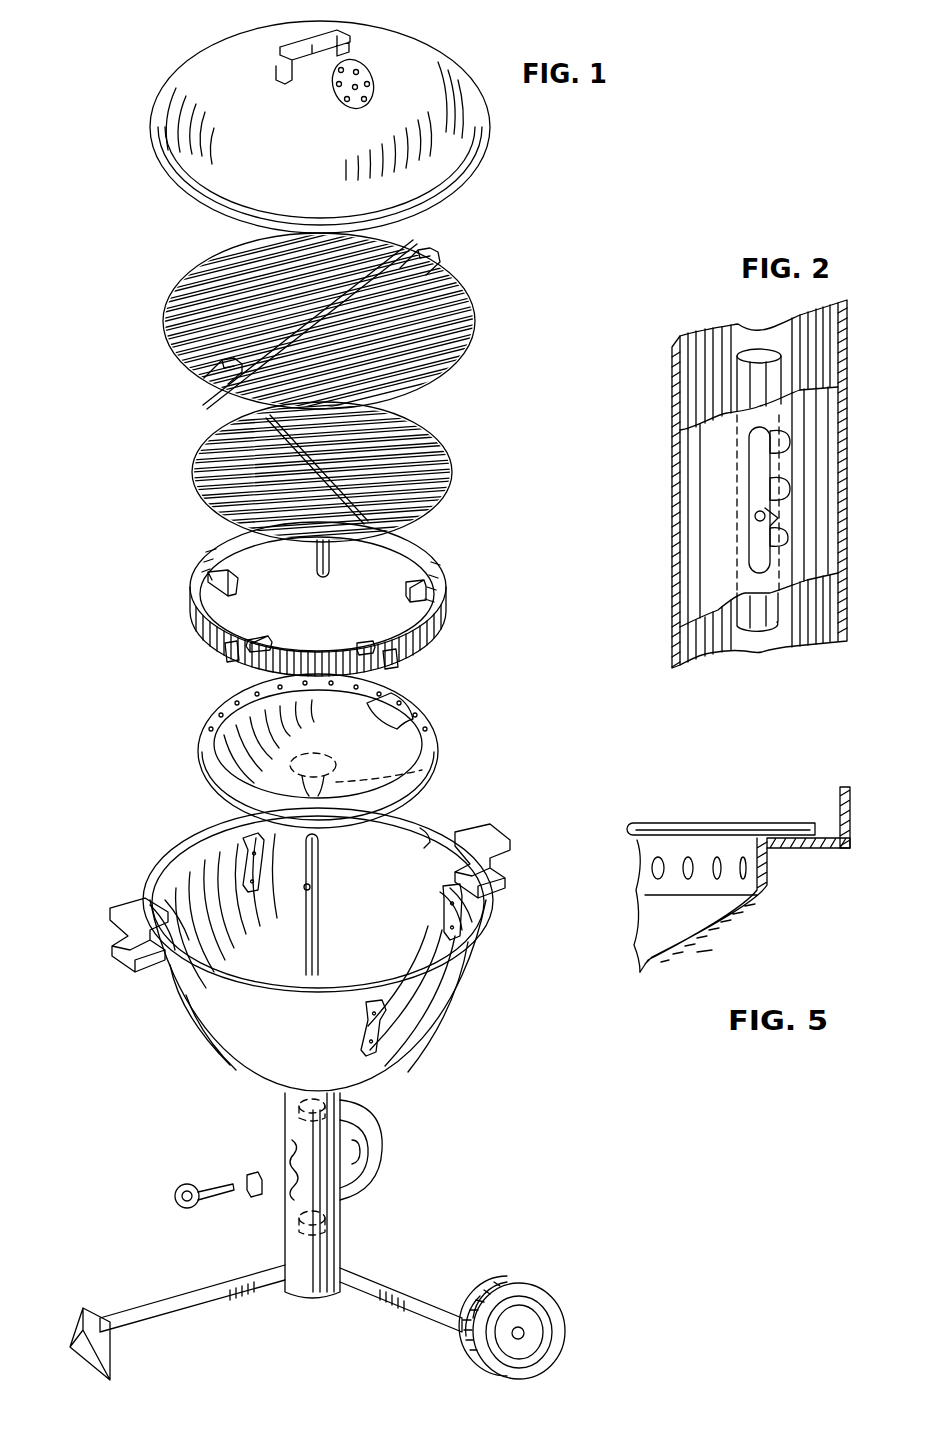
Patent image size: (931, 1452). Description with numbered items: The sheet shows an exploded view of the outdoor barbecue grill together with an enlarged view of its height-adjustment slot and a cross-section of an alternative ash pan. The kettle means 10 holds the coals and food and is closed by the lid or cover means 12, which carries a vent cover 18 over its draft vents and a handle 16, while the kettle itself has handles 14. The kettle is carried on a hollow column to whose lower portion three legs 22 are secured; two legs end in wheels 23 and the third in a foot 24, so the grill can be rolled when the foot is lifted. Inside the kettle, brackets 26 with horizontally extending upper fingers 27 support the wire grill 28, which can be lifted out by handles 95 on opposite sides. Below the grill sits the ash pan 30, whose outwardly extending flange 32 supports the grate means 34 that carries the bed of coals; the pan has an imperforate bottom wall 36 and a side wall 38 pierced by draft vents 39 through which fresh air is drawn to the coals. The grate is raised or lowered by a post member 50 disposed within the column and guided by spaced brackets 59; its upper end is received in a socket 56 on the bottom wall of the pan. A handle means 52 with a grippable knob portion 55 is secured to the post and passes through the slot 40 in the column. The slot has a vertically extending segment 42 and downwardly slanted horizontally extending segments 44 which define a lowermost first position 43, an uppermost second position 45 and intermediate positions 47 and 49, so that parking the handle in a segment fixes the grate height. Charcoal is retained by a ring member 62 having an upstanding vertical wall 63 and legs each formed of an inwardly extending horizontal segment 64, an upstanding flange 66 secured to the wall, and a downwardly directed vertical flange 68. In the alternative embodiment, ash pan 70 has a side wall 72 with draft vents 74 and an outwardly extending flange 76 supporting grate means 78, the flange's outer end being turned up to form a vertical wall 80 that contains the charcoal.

In FIG. 1, the kettle means 10 is at (178, 1048).
In FIG. 1, the lid or cover means 12 is at (225, 165).
In FIG. 1, the handles 14 is at (118, 950).
In FIG. 1, the handle 16 is at (283, 46).
In FIG. 1, the vent cover 18 is at (375, 85).
In FIG. 1, the legs 22 is at (348, 1298).
In FIG. 1, the wheels 23 is at (372, 1140).
In FIG. 1, the foot 24 is at (82, 1316).
In FIG. 1, the brackets 26 is at (245, 872).
In FIG. 1, the upper finger 27 is at (250, 840).
In FIG. 1, the wire grill 28 is at (165, 322).
In FIG. 1, the ash pan 30 is at (310, 746).
In FIG. 1, the outwardly extending flange 32 is at (213, 720).
In FIG. 1, the grate means 34 is at (205, 445).
In FIG. 1, the bottom wall 36 is at (379, 752).
In FIG. 1, the side wall 38 is at (388, 706).
In FIG. 1, the draft vents 39 is at (416, 716).
In FIG. 1, the slot 40 is at (306, 1192).
In FIG. 2, the slot 40 is at (739, 467).
In FIG. 2, the vertically extending segment 42 is at (745, 490).
In FIG. 2, the first position 43 is at (745, 560).
In FIG. 2, the horizontally extending segment 44 is at (787, 518).
In FIG. 2, the second position 45 is at (793, 436).
In FIG. 2, the intermediate position 47 is at (790, 540).
In FIG. 2, the intermediate position 49 is at (790, 490).
In FIG. 1, the post member 50 is at (385, 832).
In FIG. 2, the post member 50 is at (785, 612).
In FIG. 1, the handle means 52 is at (226, 1208).
In FIG. 2, the handle means 52 is at (757, 518).
In FIG. 1, the knob portion 55 is at (175, 1196).
In FIG. 1, the socket 56 is at (408, 774).
In FIG. 1, the guide brackets 59 is at (290, 1114).
In FIG. 1, the ring member 62 is at (280, 604).
In FIG. 1, the vertical wall 63 is at (200, 630).
In FIG. 1, the horizontal segment 64 is at (317, 552).
In FIG. 1, the upstanding flange 66 is at (231, 660).
In FIG. 1, the vertical flange 68 is at (358, 567).
In FIG. 5, the ash pan 70 is at (705, 956).
In FIG. 5, the side wall 72 is at (770, 887).
In FIG. 5, the draft vents 74 is at (652, 870).
In FIG. 5, the outwardly extending flange 76 is at (818, 847).
In FIG. 5, the grate means 78 is at (677, 827).
In FIG. 5, the vertical wall 80 is at (838, 795).
In FIG. 1, the handles 95 is at (432, 252).